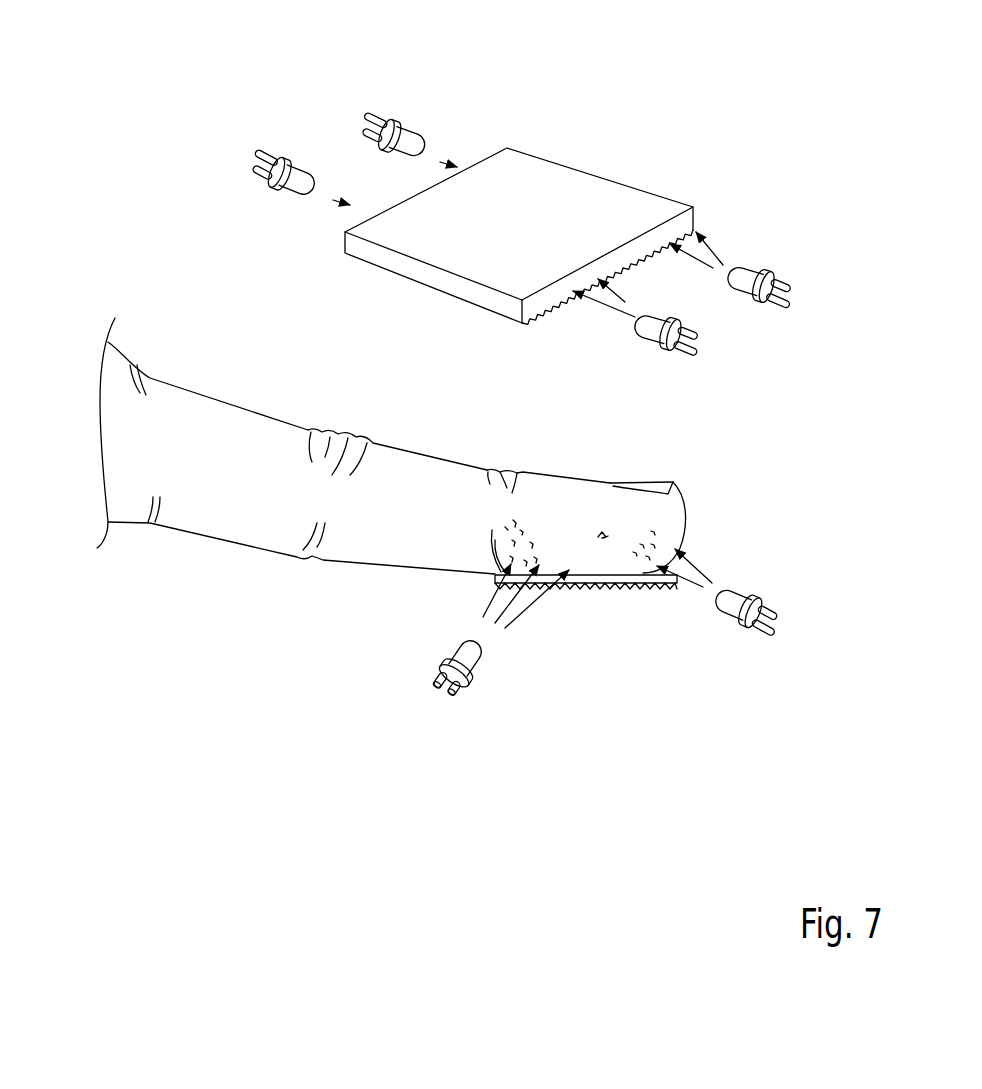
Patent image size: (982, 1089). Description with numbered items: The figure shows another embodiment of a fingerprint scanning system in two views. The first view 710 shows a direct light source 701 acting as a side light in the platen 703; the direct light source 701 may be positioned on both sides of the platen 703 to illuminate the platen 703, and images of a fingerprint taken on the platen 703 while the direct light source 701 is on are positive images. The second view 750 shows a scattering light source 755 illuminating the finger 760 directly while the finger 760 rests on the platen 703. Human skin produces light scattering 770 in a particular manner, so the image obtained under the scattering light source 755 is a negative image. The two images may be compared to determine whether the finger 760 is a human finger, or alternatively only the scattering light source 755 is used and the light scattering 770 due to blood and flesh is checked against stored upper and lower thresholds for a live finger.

The direct light source 701 is at (383, 112).
The platen 703 is at (581, 203).
The first view 710 is at (553, 216).
The second view 750 is at (477, 509).
The scattering light source 755 is at (436, 664).
The finger 760 is at (683, 513).
The light scattering 770 is at (667, 540).